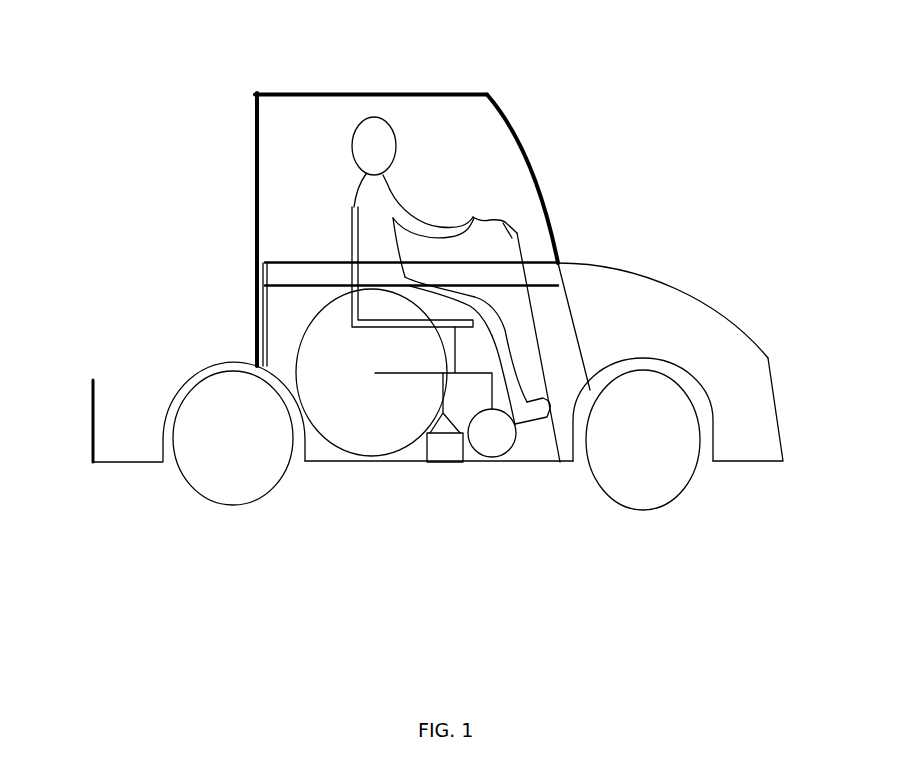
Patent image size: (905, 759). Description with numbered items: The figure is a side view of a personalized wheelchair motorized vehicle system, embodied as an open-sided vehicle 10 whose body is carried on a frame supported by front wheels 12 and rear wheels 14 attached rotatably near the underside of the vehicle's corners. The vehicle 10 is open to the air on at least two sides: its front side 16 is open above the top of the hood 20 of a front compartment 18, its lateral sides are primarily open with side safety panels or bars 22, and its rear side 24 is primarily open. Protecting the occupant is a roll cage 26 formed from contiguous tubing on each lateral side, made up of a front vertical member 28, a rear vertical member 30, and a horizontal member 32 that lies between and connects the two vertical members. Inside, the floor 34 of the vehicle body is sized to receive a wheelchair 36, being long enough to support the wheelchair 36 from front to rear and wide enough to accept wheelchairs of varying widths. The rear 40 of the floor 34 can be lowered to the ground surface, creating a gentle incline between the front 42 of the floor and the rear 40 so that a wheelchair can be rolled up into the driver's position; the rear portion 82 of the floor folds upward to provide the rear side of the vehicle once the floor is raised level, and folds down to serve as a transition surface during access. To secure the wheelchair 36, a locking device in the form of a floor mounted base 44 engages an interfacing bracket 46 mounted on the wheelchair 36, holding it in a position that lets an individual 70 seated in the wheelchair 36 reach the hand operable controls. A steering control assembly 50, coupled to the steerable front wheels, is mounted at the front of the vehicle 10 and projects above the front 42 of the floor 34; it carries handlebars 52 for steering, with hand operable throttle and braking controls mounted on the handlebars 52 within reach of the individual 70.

The open-sided vehicle 10 is at (684, 145).
The front wheels 12 is at (645, 472).
The rear wheels 14 is at (232, 463).
The front side 16 is at (818, 374).
The front compartment 18 is at (763, 433).
The hood 20 is at (663, 282).
The side safety panels or bars 22 is at (282, 276).
The rear side 24 is at (90, 373).
The roll cage 26 is at (254, 84).
The front vertical member 28 is at (513, 125).
The rear vertical member 30 is at (255, 147).
The horizontal member 32 is at (423, 90).
The floor 34 is at (318, 463).
The wheelchair 36 is at (385, 407).
The rear of the floor 40 is at (128, 458).
The front of the floor 42 is at (525, 463).
The floor mounted base 44 is at (438, 452).
The interfacing bracket 46 is at (467, 460).
The steering control assembly 50 is at (517, 233).
The handlebars 52 is at (507, 217).
The individual 70 is at (370, 192).
The rear portion of the floor 82 is at (93, 420).